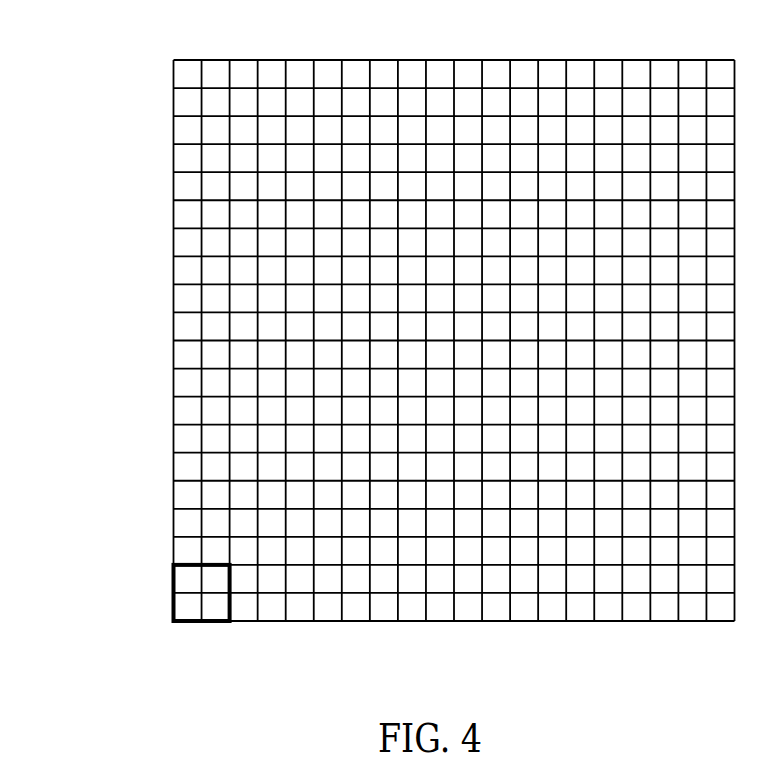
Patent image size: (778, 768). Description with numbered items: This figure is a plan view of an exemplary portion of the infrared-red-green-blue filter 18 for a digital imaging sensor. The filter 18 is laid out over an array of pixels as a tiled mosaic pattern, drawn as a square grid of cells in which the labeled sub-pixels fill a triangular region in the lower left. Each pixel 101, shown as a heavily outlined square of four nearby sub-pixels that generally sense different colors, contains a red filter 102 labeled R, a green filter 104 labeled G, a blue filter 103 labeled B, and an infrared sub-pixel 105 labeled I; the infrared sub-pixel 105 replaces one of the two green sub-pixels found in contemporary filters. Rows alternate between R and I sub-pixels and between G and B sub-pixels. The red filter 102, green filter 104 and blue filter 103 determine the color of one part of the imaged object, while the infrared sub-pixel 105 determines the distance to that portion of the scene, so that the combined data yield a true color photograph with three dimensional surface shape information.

The filter 18 is at (120, 182).
The pixel 101 is at (193, 623).
The red filter 102 is at (173, 325).
The blue filter 103 is at (218, 340).
The green filter 104 is at (173, 356).
The infrared sub-pixel 105 is at (223, 623).